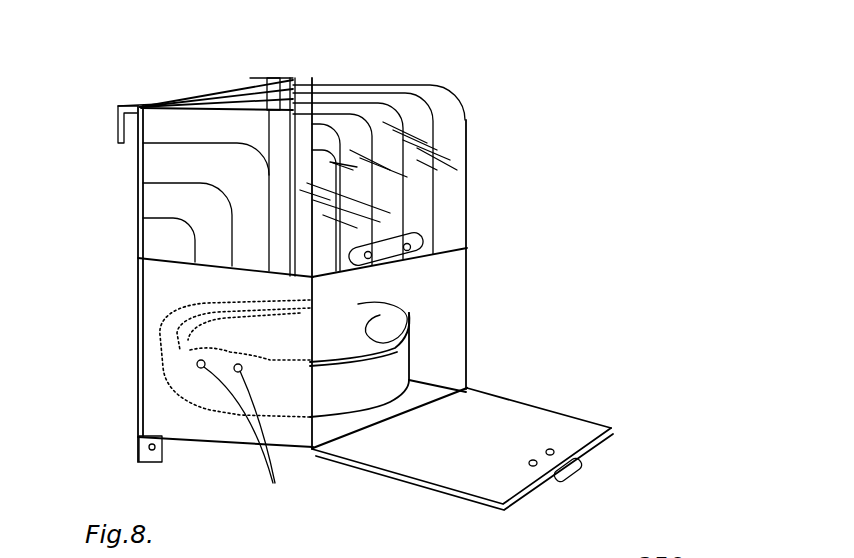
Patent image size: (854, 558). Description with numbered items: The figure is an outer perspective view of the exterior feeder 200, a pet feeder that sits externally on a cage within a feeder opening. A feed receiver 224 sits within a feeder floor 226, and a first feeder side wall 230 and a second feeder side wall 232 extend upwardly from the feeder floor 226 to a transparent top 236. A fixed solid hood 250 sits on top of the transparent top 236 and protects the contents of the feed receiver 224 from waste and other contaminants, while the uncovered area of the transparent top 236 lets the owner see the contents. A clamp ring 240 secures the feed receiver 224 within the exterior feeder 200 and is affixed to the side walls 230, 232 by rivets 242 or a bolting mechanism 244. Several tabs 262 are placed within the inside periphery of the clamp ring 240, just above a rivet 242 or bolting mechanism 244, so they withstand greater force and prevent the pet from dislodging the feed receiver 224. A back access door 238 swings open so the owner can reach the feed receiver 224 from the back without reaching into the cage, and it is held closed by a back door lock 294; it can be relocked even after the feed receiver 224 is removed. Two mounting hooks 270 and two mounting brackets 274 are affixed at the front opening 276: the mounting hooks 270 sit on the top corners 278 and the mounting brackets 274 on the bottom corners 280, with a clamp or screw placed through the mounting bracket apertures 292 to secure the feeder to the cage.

The exterior feeder 200 is at (484, 63).
The feed receiver 224 is at (342, 397).
The feeder floor 226 is at (413, 397).
The first feeder side wall 230 is at (153, 299).
The second feeder side wall 232 is at (467, 268).
The transparent top 236 is at (173, 193).
The back access door 238 is at (548, 414).
The clamp ring 240 is at (167, 343).
The rivets 242 is at (310, 303).
The bolting mechanism 244 is at (394, 391).
The fixed solid hood 250 is at (328, 95).
The tabs 262 is at (410, 353).
The mounting hooks 270 is at (118, 117).
The mounting brackets 274 is at (138, 459).
The front opening 276 is at (521, 271).
The top corners 278 is at (137, 105).
The bottom corners 280 is at (140, 428).
The mounting bracket apertures 292 is at (162, 447).
The back door lock 294 is at (572, 480).